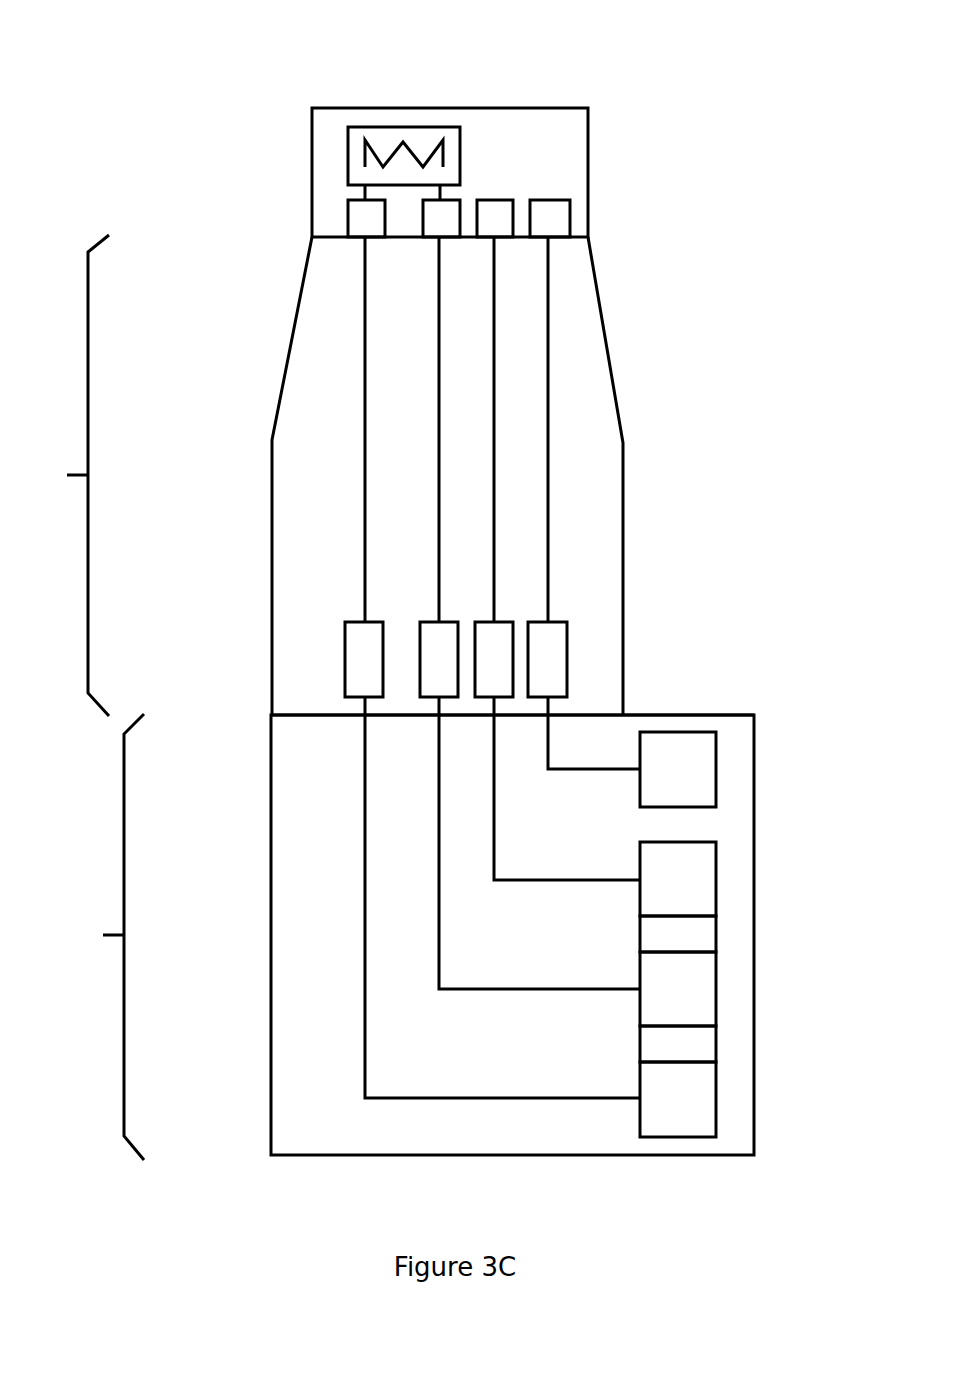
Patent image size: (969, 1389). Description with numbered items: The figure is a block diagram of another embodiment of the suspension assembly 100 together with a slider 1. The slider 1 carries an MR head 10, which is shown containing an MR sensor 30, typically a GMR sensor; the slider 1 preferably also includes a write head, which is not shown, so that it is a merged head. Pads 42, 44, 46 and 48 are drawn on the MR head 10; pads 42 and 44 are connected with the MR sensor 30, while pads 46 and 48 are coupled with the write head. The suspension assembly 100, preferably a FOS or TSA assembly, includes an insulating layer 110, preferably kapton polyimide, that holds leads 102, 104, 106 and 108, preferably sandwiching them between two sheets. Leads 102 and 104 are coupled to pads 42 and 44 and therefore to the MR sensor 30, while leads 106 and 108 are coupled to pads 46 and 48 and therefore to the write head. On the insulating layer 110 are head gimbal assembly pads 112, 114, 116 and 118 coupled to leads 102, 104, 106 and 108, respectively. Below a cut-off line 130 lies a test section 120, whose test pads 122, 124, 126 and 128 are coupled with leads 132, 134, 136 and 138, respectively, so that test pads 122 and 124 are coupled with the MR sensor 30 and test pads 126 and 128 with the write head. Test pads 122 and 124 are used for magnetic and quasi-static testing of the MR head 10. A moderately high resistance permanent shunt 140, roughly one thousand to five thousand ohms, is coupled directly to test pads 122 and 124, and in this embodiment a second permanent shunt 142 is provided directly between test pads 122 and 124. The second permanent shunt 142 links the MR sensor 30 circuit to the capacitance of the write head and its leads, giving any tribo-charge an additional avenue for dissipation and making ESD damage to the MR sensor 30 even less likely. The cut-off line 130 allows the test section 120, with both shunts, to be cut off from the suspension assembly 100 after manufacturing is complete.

The suspension assembly 100 is at (437, 42).
The slider 1 is at (570, 108).
The MR head 10 is at (423, 127).
The MR sensor 30 is at (348, 163).
The pad 42 is at (348, 218).
The pad 44 is at (460, 201).
The pad 46 is at (513, 203).
The pad 48 is at (570, 218).
The insulating layer 110 is at (317, 475).
The lead 102 is at (363, 512).
The lead 104 is at (437, 458).
The lead 106 is at (497, 422).
The lead 108 is at (552, 550).
The head gimbal assembly pad 112 is at (345, 678).
The head gimbal assembly pad 114 is at (420, 622).
The head gimbal assembly pad 116 is at (513, 622).
The head gimbal assembly pad 118 is at (567, 678).
The test section 120 is at (399, 937).
The cut-off line 130 is at (312, 715).
The lead 132 is at (420, 1100).
The lead 134 is at (453, 990).
The lead 136 is at (490, 860).
The lead 138 is at (547, 752).
The test pad 122 is at (716, 1101).
The test pad 124 is at (716, 972).
The test pad 126 is at (716, 880).
The test pad 128 is at (716, 769).
The permanent shunt 140 is at (716, 1043).
The second permanent shunt 142 is at (716, 934).